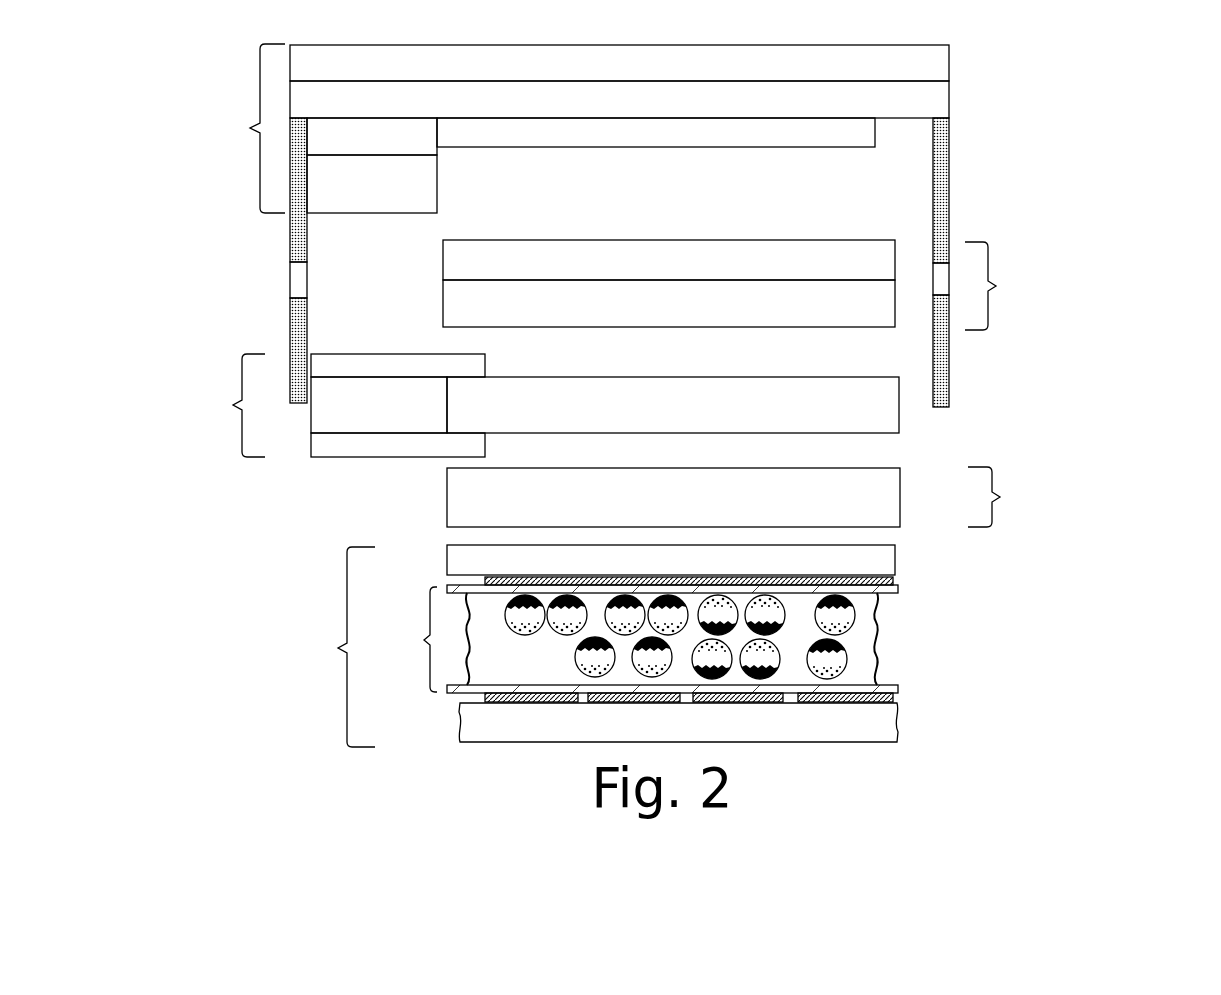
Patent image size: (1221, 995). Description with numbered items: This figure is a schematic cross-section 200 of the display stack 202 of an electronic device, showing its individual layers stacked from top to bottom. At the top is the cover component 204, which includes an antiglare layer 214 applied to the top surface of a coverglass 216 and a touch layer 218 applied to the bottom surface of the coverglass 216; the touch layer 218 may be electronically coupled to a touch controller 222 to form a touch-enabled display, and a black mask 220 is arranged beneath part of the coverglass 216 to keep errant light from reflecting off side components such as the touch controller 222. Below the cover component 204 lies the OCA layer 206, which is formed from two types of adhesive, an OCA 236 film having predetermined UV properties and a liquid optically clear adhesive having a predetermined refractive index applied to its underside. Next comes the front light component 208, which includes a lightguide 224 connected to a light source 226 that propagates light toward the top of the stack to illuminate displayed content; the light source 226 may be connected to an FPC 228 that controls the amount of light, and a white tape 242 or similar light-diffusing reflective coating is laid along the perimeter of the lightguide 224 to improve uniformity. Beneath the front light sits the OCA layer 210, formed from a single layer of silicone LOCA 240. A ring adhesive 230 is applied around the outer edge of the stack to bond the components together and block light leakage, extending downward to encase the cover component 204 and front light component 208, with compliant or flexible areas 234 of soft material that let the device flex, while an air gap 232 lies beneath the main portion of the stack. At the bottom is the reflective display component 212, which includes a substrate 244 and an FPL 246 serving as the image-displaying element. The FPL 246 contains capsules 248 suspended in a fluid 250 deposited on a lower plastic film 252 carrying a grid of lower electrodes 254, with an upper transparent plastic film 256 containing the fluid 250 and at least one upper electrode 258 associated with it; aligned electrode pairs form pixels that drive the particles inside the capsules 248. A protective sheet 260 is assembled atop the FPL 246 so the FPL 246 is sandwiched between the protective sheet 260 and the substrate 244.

The schematic cross-section 200 is at (1117, 107).
The display stack 202 is at (228, 75).
The cover component 204 is at (213, 128).
The OCA layer 206 is at (1054, 281).
The front light component 208 is at (191, 405).
The OCA layer 210 is at (1059, 481).
The display component 212 is at (560, 513).
The antiglare layer 214 is at (619, 63).
The coverglass 216 is at (619, 99).
The touch layer 218 is at (656, 132).
The black mask 220 is at (372, 136).
The touch controller 222 is at (372, 184).
The lightguide 224 is at (673, 405).
The light source 226 is at (379, 405).
The FPC 228 is at (398, 445).
The ring adhesive 230 is at (288, 232).
The air gap 232 is at (293, 460).
The compliant or flexible areas 234 is at (288, 280).
The OCA 236 is at (669, 260).
The LOCA 240 is at (673, 497).
The white tape 242 is at (398, 365).
The substrate 244 is at (678, 722).
The FPL 246 is at (407, 639).
The capsules 248 is at (567, 651).
The fluid 250 is at (888, 637).
The lower plastic film 252 is at (903, 690).
The lower electrodes 254 is at (903, 701).
The upper transparent plastic film 256 is at (903, 595).
The upper electrode 258 is at (903, 577).
The protective sheet 260 is at (671, 560).